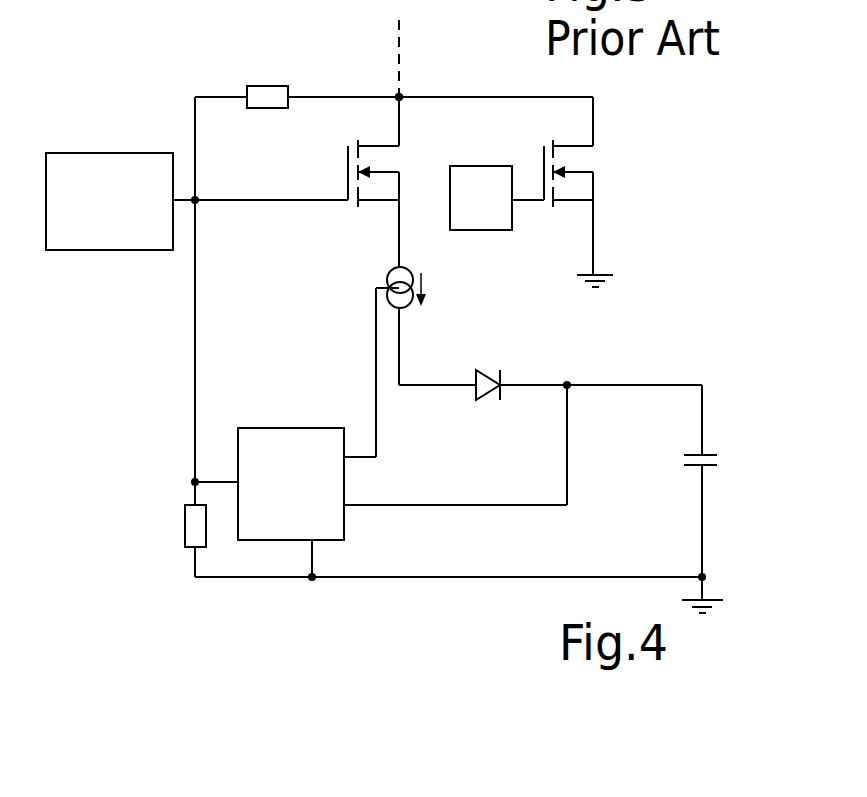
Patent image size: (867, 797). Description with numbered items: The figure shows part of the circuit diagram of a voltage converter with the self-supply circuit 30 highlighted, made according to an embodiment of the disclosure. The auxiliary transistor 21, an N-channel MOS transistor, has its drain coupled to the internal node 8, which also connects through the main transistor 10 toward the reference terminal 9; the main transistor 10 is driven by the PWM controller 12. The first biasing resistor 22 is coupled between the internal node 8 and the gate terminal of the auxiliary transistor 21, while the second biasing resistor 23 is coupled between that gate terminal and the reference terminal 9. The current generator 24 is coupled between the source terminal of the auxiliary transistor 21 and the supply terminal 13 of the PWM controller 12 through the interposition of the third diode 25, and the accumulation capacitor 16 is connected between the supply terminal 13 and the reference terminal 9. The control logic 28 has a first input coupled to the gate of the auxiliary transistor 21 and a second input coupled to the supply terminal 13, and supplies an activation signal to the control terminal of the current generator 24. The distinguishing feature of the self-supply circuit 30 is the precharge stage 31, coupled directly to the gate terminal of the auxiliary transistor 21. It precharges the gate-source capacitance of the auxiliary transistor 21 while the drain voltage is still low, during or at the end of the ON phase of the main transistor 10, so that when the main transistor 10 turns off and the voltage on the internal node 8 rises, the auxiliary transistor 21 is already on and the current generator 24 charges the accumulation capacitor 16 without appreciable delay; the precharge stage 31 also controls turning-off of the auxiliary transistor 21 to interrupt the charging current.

The self-supply circuit 30 is at (118, 89).
The precharge stage 31 is at (98, 250).
The first biasing resistor 22 is at (267, 108).
The internal node 8 is at (399, 97).
The auxiliary transistor 21 is at (378, 172).
The current generator 24 is at (397, 268).
The PWM controller 12 is at (485, 218).
The main transistor 10 is at (580, 167).
The reference terminal 9 is at (603, 284).
The third diode 25 is at (487, 367).
The supply terminal 13 is at (703, 383).
The accumulation capacitor 16 is at (715, 452).
The control logic 28 is at (301, 440).
The second biasing resistor 23 is at (188, 525).